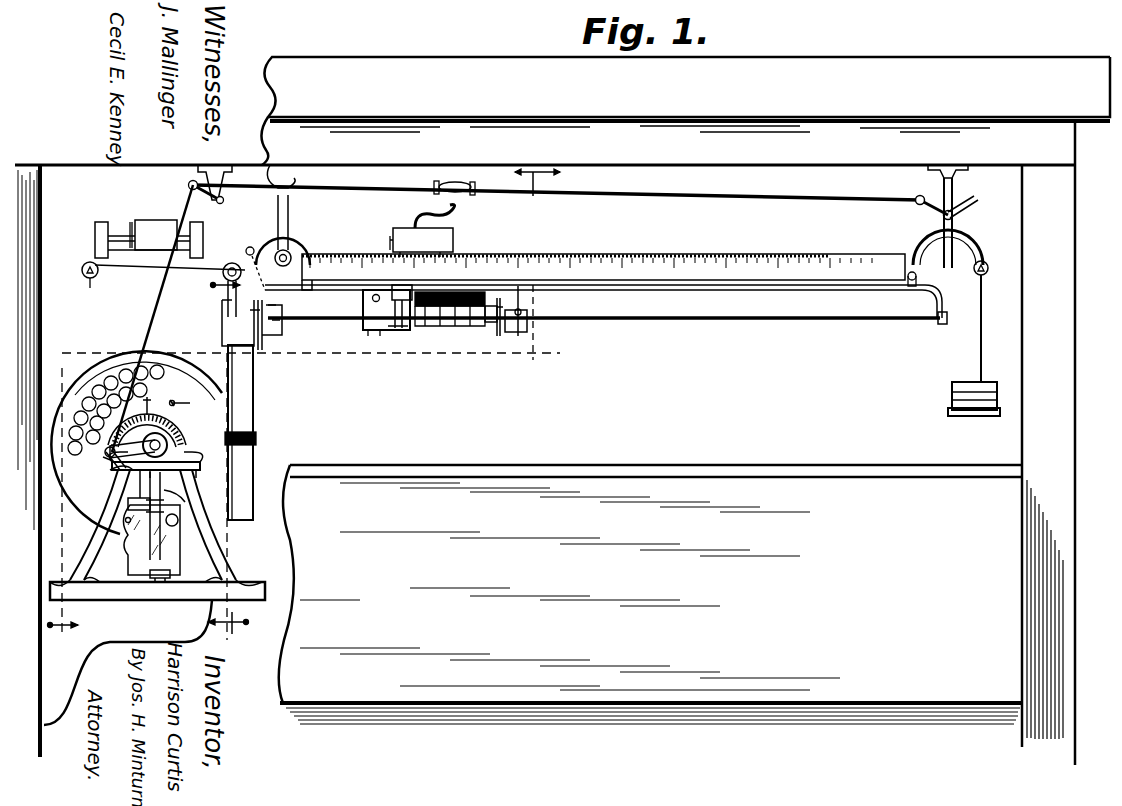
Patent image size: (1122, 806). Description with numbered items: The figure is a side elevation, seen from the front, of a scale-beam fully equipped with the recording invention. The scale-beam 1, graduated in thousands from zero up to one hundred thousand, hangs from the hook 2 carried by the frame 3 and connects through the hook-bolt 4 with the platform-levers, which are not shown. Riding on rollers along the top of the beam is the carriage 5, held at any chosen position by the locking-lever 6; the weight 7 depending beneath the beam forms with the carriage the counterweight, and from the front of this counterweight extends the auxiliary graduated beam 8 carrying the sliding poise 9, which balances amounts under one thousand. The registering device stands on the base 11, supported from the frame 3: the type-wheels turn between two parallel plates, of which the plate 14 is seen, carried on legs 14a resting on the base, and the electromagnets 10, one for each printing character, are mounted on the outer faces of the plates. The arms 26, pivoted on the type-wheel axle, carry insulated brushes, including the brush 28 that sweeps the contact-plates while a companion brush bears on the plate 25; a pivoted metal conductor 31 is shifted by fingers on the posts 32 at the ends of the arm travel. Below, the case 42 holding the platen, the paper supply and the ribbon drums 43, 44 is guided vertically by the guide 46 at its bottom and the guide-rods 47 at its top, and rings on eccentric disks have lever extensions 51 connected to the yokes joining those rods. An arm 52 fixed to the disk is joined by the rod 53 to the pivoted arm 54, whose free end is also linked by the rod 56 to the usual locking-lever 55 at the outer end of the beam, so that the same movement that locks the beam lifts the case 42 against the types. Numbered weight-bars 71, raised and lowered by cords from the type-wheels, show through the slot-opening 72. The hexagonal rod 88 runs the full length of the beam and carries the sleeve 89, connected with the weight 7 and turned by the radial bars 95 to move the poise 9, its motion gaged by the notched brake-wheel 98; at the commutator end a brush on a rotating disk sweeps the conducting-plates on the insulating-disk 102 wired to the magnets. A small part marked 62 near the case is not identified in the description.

The scale-beam 1 is at (622, 286).
The hook 2 is at (318, 409).
The frame 3 is at (706, 166).
The hook-bolt 4 is at (222, 318).
The carriage 5 is at (421, 242).
The locking-lever 6 is at (417, 216).
The weight 7 is at (363, 300).
The auxiliary graduated beam 8 is at (450, 328).
The sliding poise 9 is at (394, 328).
The electromagnets 10 is at (160, 366).
The base 11 is at (158, 600).
The plate 14 is at (156, 423).
The legs 14a is at (80, 556).
The plate 25 is at (147, 412).
The arms 26 is at (118, 470).
The brush 28 is at (147, 432).
The metal conductor 31 is at (104, 454).
The posts 32 is at (100, 469).
The case 42 is at (180, 548).
The drum 43 is at (185, 502).
The drum 44 is at (150, 520).
The guide 46 is at (171, 576).
The guide-rods 47 is at (139, 490).
The lever extensions 51 is at (168, 443).
The arm 52 is at (126, 447).
The rod 53 is at (149, 312).
The pivoted arm 54 is at (211, 192).
The locking-lever 55 is at (934, 206).
The rod 56 is at (624, 196).
The pivot 62 is at (178, 522).
The weight-bars 71 is at (254, 418).
The slot-opening 72 is at (257, 438).
The hexagonal rod 88 is at (607, 326).
The sleeve 89 is at (478, 326).
The radial bars 95 is at (520, 340).
The brake-wheel 98 is at (508, 325).
The insulating-disk 102 is at (274, 310).